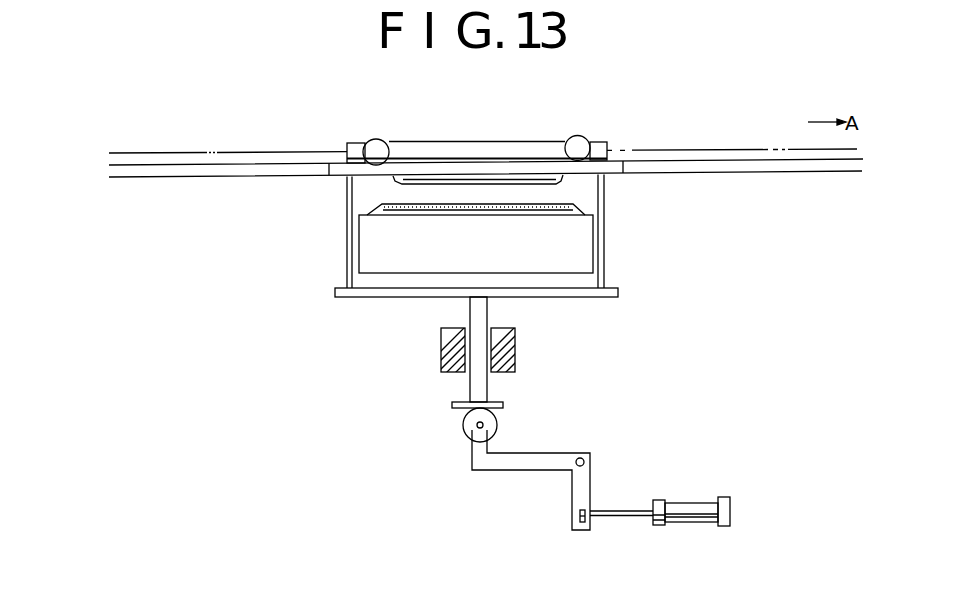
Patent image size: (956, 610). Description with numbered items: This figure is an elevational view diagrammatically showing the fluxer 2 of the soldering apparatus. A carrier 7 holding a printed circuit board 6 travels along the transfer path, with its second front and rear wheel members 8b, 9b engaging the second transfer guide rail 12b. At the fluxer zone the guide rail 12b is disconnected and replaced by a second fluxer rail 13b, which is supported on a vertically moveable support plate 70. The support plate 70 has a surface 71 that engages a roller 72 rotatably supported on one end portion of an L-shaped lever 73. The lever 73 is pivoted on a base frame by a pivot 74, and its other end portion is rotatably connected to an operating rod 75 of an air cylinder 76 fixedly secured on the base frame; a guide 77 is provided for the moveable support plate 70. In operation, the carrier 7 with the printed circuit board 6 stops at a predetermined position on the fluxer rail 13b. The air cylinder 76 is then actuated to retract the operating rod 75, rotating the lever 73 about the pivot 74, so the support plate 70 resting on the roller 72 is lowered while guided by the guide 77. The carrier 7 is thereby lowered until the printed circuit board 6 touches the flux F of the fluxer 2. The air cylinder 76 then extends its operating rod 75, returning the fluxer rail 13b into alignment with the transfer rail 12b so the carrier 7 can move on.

The fluxer 2 is at (582, 252).
The printed circuit board 6 is at (435, 178).
The carrier 7 is at (483, 148).
The second front wheel member 8b is at (578, 142).
The second rear wheel member 9b is at (377, 150).
The second transfer guide rail 12b is at (215, 170).
The second fluxer rail 13b is at (537, 165).
The flux F is at (372, 203).
The support plate 70 is at (588, 293).
The surface 71 is at (457, 410).
The roller 72 is at (497, 420).
The L-shaped lever 73 is at (523, 462).
The pivot 74 is at (582, 457).
The operating rod 75 is at (628, 516).
The air cylinder 76 is at (690, 516).
The guide 77 is at (443, 357).